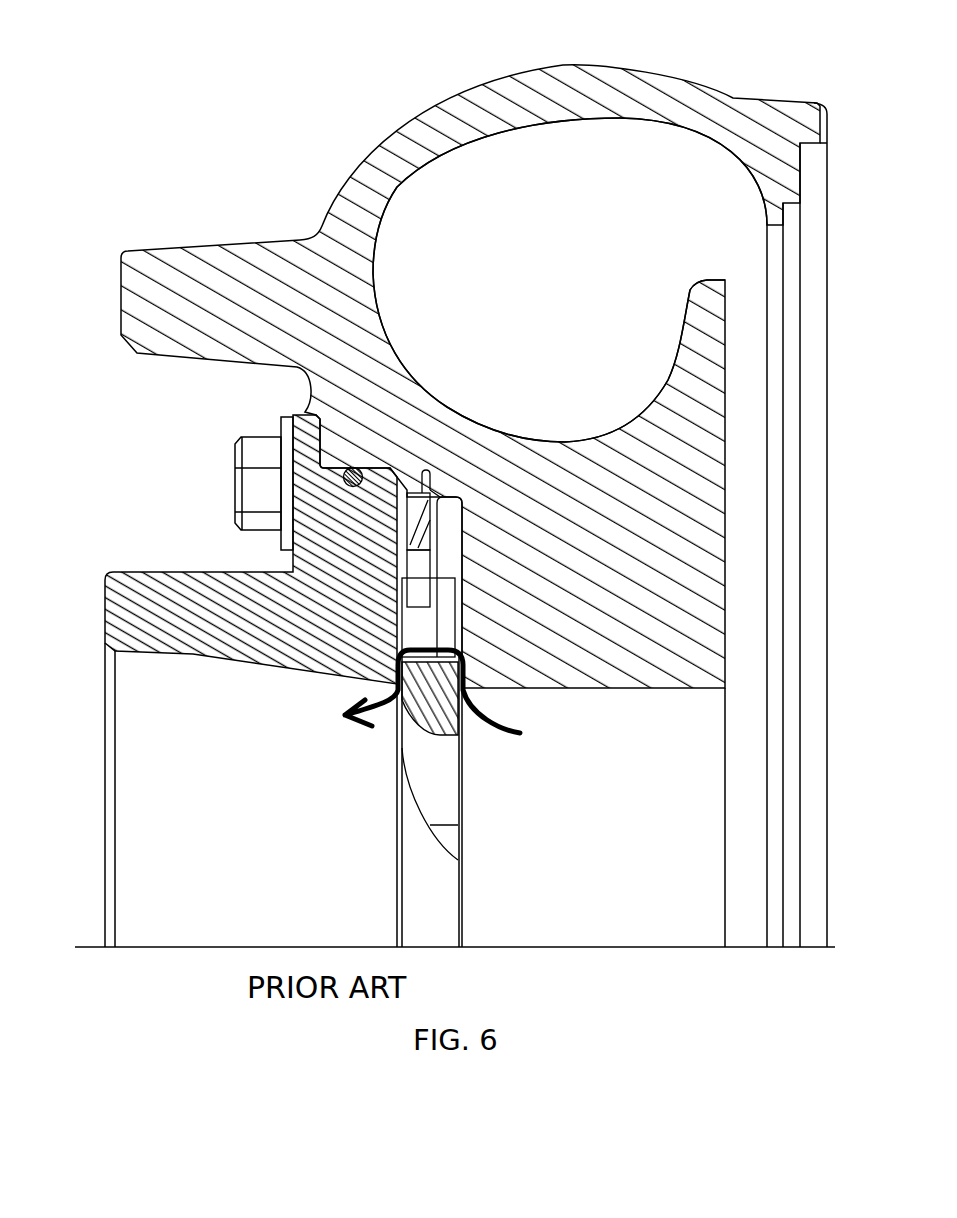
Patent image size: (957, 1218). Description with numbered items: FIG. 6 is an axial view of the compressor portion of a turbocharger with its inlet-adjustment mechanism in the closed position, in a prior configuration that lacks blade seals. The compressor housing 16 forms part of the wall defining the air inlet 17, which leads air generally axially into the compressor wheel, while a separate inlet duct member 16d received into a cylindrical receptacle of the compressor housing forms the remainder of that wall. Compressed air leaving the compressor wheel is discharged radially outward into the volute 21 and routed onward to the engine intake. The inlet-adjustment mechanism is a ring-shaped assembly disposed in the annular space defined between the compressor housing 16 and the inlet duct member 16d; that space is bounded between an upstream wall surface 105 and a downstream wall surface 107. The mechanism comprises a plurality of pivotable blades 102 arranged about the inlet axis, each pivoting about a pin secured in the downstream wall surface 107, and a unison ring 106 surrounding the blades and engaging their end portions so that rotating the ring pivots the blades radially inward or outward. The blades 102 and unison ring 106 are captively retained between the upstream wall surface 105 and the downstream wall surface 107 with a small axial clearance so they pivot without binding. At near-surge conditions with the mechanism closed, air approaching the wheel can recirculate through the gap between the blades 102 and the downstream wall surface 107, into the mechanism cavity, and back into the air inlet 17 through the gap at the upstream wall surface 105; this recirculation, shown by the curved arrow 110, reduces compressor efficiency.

The compressor housing 16 is at (258, 252).
The inlet duct member 16d is at (140, 593).
The air inlet 17 is at (187, 652).
The volute 21 is at (522, 202).
The blades 102 is at (443, 802).
The upstream wall surface 105 is at (418, 622).
The unison ring 106 is at (417, 503).
The downstream wall surface 107 is at (445, 613).
The curved arrow 110 is at (495, 730).